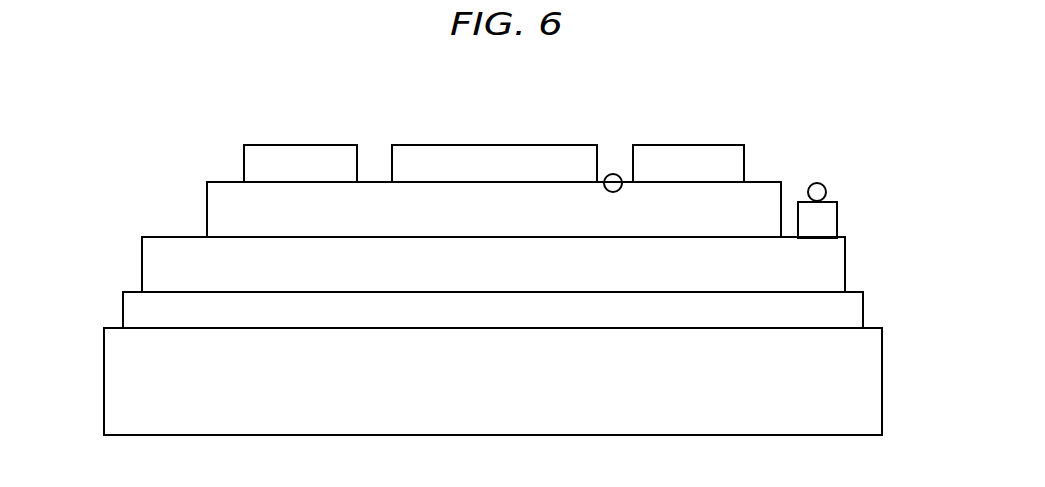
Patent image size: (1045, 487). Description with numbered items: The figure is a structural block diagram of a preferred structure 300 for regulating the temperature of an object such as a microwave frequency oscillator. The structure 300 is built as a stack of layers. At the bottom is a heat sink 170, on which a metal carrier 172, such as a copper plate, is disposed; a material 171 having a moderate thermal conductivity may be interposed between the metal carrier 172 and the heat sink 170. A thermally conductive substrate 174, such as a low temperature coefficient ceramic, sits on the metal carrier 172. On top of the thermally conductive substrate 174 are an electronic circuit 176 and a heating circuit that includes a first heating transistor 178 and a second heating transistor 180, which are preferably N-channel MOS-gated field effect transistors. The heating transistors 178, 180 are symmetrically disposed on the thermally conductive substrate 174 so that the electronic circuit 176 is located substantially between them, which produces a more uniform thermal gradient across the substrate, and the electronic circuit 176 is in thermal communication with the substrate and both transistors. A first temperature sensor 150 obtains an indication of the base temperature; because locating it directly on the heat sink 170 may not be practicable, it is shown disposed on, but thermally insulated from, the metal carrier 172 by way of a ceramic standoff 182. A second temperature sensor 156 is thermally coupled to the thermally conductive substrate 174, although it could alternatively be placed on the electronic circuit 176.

The structure 300 is at (891, 96).
The heat sink 170 is at (104, 372).
The material having a moderate thermal conductivity 171 is at (123, 312).
The metal carrier 172 is at (142, 257).
The thermally conductive substrate 174 is at (207, 212).
The electronic circuit 176 is at (410, 145).
The first heating transistor 178 is at (244, 163).
The second heating transistor 180 is at (744, 159).
The ceramic standoff 182 is at (837, 221).
The first temperature sensor 150 is at (824, 186).
The second temperature sensor 156 is at (611, 174).